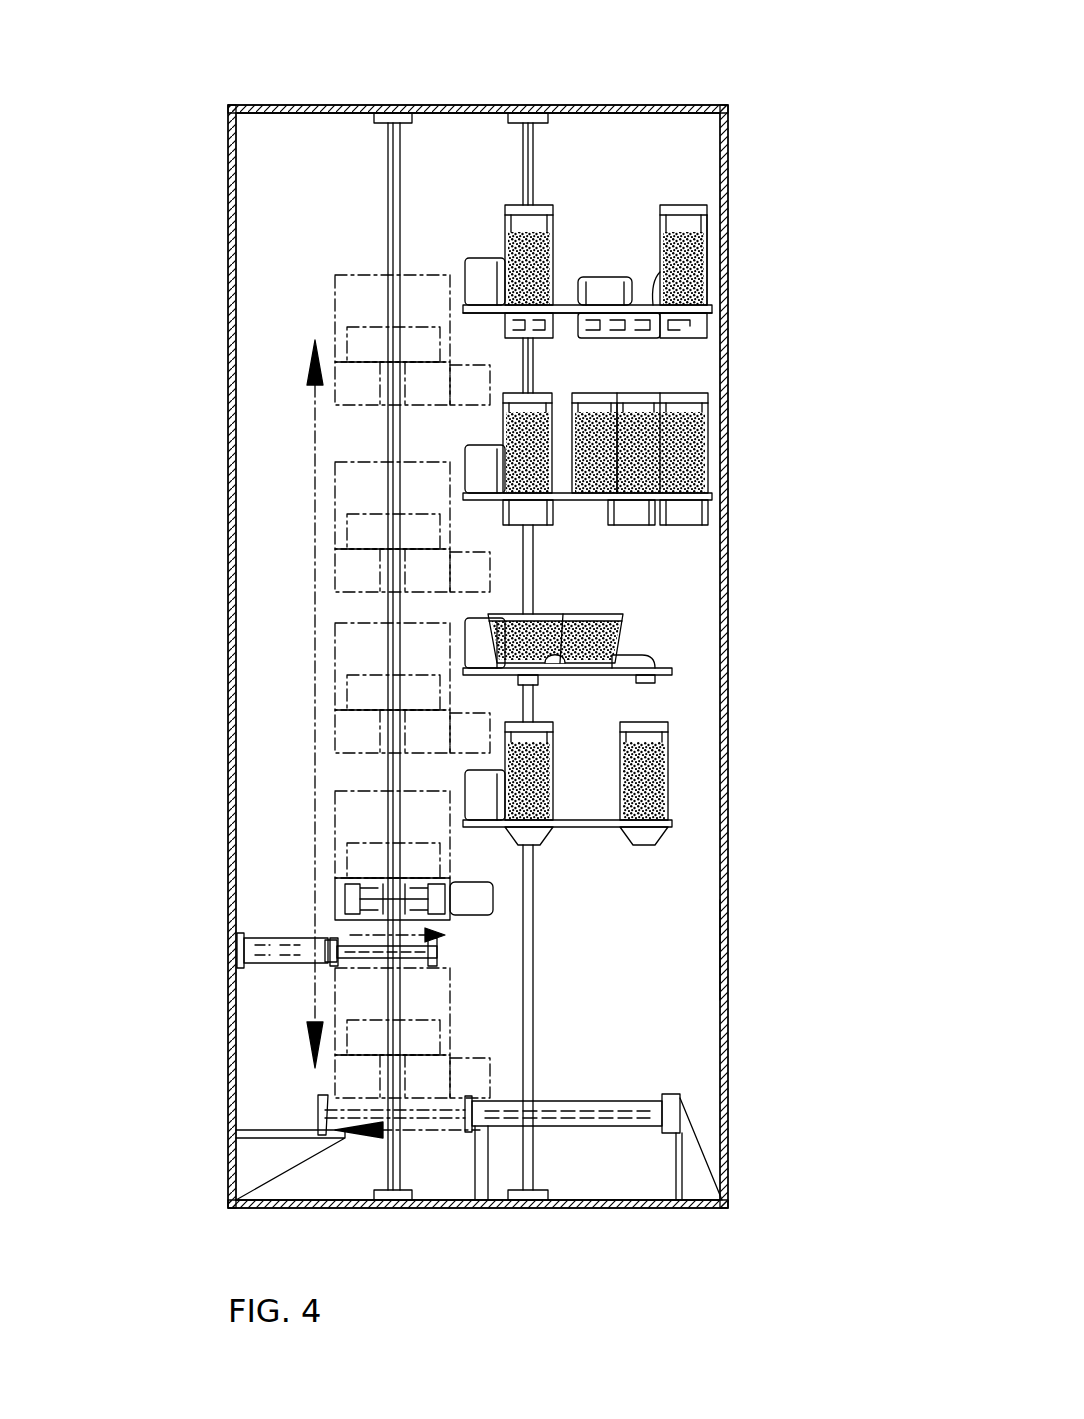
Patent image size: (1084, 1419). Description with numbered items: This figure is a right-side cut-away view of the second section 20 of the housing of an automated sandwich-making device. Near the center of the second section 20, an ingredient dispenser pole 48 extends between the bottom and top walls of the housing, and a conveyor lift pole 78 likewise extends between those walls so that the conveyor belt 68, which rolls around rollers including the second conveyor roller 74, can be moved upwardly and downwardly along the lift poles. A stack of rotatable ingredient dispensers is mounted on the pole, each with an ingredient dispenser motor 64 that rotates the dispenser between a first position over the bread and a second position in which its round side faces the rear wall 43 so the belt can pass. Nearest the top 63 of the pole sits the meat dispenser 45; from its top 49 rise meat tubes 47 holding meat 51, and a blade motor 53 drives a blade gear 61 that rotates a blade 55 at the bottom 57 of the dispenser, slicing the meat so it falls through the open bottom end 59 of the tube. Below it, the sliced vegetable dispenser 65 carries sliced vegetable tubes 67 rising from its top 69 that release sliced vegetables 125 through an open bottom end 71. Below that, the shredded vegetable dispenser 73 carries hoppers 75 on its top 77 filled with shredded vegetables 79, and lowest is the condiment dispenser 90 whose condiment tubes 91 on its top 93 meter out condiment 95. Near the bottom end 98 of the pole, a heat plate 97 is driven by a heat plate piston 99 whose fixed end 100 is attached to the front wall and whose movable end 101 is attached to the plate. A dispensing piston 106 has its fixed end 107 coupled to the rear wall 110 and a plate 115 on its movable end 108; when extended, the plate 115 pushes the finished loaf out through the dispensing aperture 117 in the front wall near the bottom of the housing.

The second section 20 is at (396, 85).
The rear wall 43 is at (728, 750).
The meat dispenser 45 is at (712, 312).
The meat tube 47 is at (707, 237).
The ingredient dispenser pole 48 is at (538, 572).
The top of the meat dispenser 49 is at (705, 272).
The meat 51 is at (522, 230).
The blade motor 53 is at (600, 277).
The blade 55 is at (672, 335).
The bottom of the meat dispenser 57 is at (463, 310).
The open bottom end of the meat tube 59 is at (700, 333).
The blade gear 61 is at (625, 330).
The top of the ingredient dispenser pole 63 is at (540, 157).
The ingredient dispenser motor 64 is at (465, 262).
The sliced vegetable dispenser 65 is at (712, 497).
The sliced vegetable tube 67 is at (708, 418).
The conveyor belt 68 is at (340, 893).
The top of the sliced vegetable dispenser 69 is at (708, 476).
The open bottom end of the sliced vegetable tube 71 is at (515, 522).
The shredded vegetable dispenser 73 is at (672, 670).
The second conveyor roller 74 is at (420, 880).
The hopper 75 is at (623, 616).
The top of the shredded vegetable dispenser 77 is at (640, 642).
The conveyor lift pole 78 is at (390, 200).
The shredded vegetables 79 is at (552, 660).
The condiment dispenser 90 is at (668, 822).
The condiment tube 91 is at (668, 763).
The top of the condiment dispenser 93 is at (610, 824).
The condiment 95 is at (655, 832).
The heat plate 97 is at (355, 953).
The bottom end of the ingredient dispenser pole 98 is at (537, 1167).
The heat plate piston 99 is at (275, 936).
The fixed end of the heat plate piston 100 is at (237, 950).
The movable end of the heat plate piston 101 is at (437, 948).
The dispensing piston 106 is at (627, 1100).
The fixed end of the dispensing piston 107 is at (680, 1115).
The movable end of the dispensing piston 108 is at (477, 1118).
The rear wall of the second section 110 is at (728, 958).
The plate 115 is at (465, 1135).
The dispensing aperture 117 is at (330, 1132).
The sliced vegetables 125 is at (650, 476).